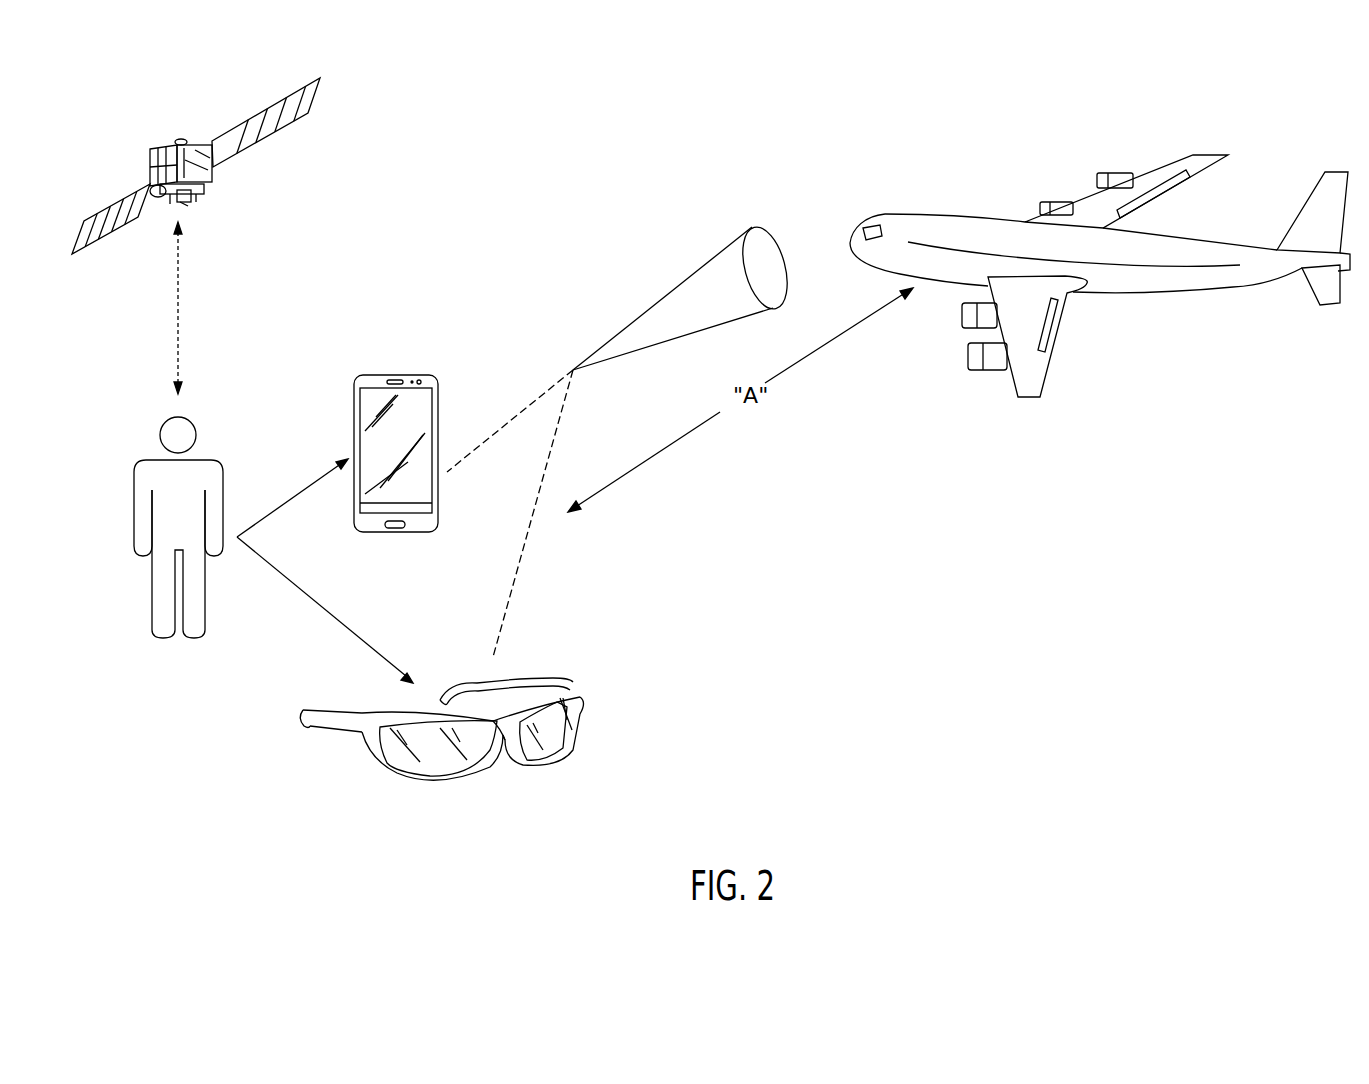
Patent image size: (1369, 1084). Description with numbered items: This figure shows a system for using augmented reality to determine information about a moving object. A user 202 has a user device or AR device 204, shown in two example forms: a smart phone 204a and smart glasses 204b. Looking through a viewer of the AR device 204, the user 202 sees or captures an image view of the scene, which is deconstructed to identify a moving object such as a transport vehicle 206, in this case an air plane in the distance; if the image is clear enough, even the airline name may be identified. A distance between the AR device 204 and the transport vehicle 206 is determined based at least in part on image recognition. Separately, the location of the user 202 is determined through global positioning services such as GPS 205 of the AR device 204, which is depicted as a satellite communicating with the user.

The user 202 is at (133, 504).
The AR device 204 is at (432, 616).
The smart phone 204a is at (409, 372).
The smart glasses 204b is at (441, 747).
The GPS 205 is at (214, 175).
The transport vehicle 206 is at (1173, 292).